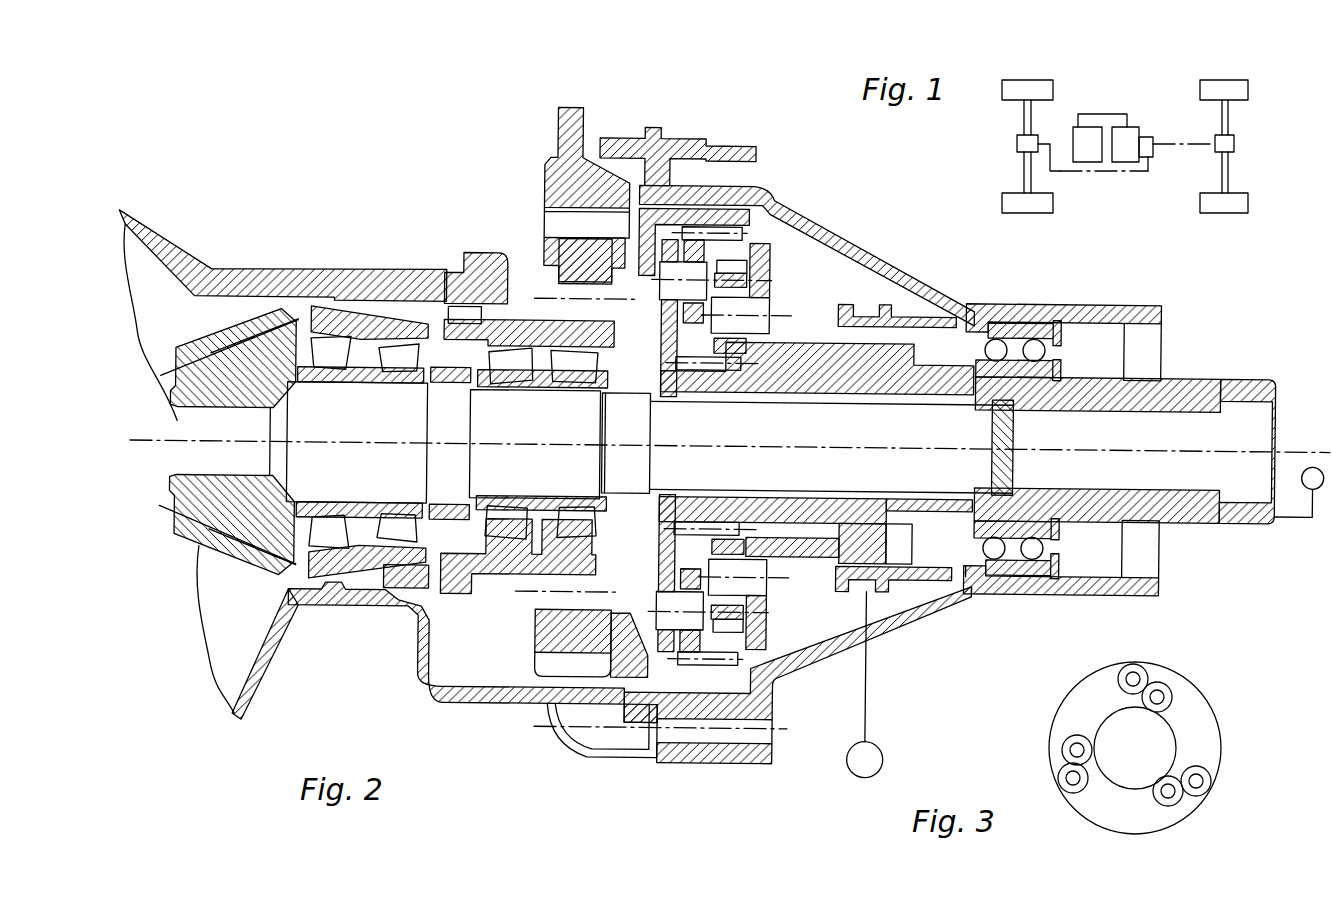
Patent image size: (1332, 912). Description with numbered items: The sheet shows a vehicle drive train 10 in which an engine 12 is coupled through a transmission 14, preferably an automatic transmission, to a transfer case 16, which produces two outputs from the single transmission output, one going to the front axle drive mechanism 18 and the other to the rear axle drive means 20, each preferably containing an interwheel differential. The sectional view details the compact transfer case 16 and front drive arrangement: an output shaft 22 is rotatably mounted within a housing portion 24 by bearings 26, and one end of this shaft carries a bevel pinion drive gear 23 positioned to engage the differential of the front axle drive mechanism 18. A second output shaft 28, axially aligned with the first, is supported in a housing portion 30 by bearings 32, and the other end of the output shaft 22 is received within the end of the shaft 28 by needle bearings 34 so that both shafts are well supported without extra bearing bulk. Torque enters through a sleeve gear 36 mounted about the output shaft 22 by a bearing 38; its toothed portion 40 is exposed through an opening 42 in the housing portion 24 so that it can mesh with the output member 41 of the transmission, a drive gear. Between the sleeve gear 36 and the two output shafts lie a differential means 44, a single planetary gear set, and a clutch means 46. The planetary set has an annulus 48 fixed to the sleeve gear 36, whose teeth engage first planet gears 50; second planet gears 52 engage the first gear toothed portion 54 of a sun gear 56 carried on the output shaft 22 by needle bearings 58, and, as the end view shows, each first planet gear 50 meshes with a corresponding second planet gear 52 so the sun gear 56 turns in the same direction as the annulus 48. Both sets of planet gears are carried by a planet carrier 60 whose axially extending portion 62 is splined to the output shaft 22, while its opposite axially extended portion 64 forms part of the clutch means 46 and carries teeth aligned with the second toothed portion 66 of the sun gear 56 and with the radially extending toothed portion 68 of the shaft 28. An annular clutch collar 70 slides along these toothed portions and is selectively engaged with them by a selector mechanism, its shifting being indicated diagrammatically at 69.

In FIG. 1, the vehicle drive train 10 is at (1170, 52).
In FIG. 1, the engine 12 is at (1078, 128).
In FIG. 1, the transmission 14 is at (1131, 133).
In FIG. 1, the transfer case 16 is at (1147, 160).
In FIG. 2, the transfer case 16 is at (850, 212).
In FIG. 1, the front axle drive mechanism 18 is at (1017, 143).
In FIG. 2, the front axle drive mechanism 18 is at (168, 220).
In FIG. 1, the rear axle drive means 20 is at (1234, 143).
In FIG. 2, the rear axle drive means 20 is at (1313, 455).
In FIG. 2, the output shaft 22 is at (362, 483).
In FIG. 2, the bevel pinion drive gear 23 is at (200, 552).
In FIG. 2, the housing portion 24 is at (512, 696).
In FIG. 2, the bearings 26 is at (387, 345).
In FIG. 2, the second output shaft 28 is at (1225, 509).
In FIG. 2, the housing portion 30 is at (905, 540).
In FIG. 2, the bearings 32 is at (1022, 567).
In FIG. 2, the needle bearings 34 is at (957, 529).
In FIG. 2, the sleeve gear 36 is at (517, 313).
In FIG. 2, the bearing 38 is at (518, 523).
In FIG. 2, the toothed portion 40 is at (537, 253).
In FIG. 2, the output member 41 is at (578, 112).
In FIG. 2, the opening 42 is at (502, 248).
In FIG. 2, the differential means 44 is at (835, 265).
In FIG. 2, the clutch means 46 is at (917, 311).
In FIG. 2, the annulus 48 is at (762, 193).
In FIG. 3, the annulus 48 is at (1205, 692).
In FIG. 2, the first planet gears 50 is at (748, 226).
In FIG. 3, the first planet gears 50 is at (1143, 672).
In FIG. 2, the second planet gears 52 is at (772, 253).
In FIG. 3, the second planet gears 52 is at (1170, 692).
In FIG. 2, the first gear toothed portion 54 is at (785, 331).
In FIG. 2, the sun gear 56 is at (790, 505).
In FIG. 3, the sun gear 56 is at (1115, 787).
In FIG. 2, the needle bearings 58 is at (945, 539).
In FIG. 2, the planet carrier 60 is at (668, 565).
In FIG. 2, the axially extending portion 62 is at (665, 535).
In FIG. 2, the axially extended portion 64 is at (777, 543).
In FIG. 2, the second toothed portion 66 is at (877, 539).
In FIG. 2, the radially extending toothed portion 68 is at (955, 314).
In FIG. 2, the selector mechanism shifting 69 is at (887, 750).
In FIG. 2, the annular clutch collar 70 is at (890, 299).